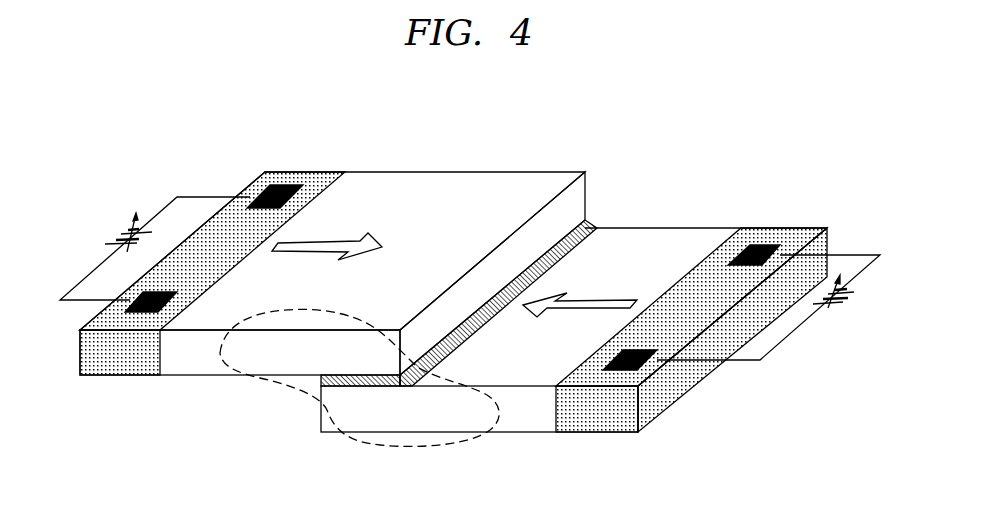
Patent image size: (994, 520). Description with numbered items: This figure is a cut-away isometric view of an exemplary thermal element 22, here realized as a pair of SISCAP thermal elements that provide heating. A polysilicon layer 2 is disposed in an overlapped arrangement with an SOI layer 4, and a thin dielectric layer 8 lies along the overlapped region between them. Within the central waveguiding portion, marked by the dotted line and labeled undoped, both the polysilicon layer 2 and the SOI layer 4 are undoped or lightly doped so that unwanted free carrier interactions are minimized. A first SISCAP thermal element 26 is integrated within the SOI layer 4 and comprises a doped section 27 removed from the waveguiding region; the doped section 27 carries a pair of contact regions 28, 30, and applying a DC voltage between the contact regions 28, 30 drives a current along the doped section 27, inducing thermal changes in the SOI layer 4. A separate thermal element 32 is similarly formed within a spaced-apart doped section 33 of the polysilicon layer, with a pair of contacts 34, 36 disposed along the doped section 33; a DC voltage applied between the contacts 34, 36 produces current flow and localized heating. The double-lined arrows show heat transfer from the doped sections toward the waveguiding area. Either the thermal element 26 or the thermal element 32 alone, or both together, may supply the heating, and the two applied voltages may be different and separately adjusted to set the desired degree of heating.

The polysilicon layer 2 is at (478, 183).
The SOI layer 4 is at (650, 233).
The dielectric layer 8 is at (587, 224).
The thermal element 22 is at (632, 100).
The first SISCAP thermal element 26 is at (583, 452).
The doped section 27 is at (772, 234).
The contact region 28 is at (605, 366).
The contact region 30 is at (728, 259).
The thermal element 32 is at (170, 205).
The doped section 33 is at (117, 365).
The contact 34 is at (178, 302).
The contact 36 is at (303, 203).